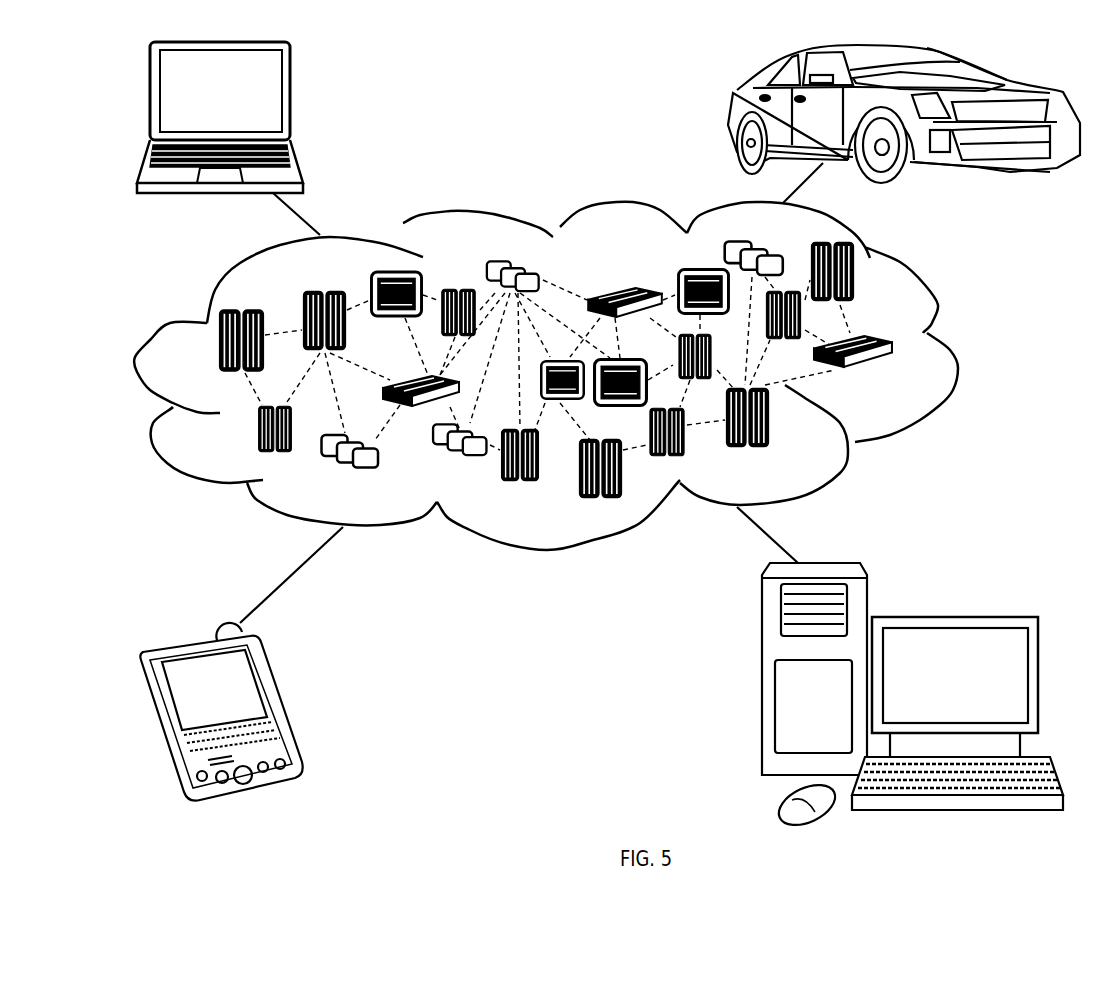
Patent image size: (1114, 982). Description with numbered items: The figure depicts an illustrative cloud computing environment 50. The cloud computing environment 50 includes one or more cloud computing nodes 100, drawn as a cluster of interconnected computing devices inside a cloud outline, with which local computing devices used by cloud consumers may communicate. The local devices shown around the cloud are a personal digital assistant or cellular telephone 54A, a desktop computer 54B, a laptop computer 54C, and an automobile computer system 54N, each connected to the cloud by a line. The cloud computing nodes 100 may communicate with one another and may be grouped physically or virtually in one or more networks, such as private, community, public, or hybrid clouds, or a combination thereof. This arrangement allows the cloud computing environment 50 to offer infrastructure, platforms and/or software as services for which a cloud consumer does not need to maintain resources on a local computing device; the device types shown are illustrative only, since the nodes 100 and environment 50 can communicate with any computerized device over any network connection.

The cloud computing environment 50 is at (952, 352).
The cloud computing nodes 100 is at (896, 378).
The personal digital assistant or cellular telephone 54A is at (282, 700).
The desktop computer 54B is at (950, 617).
The laptop computer 54C is at (293, 100).
The automobile computer system 54N is at (732, 112).